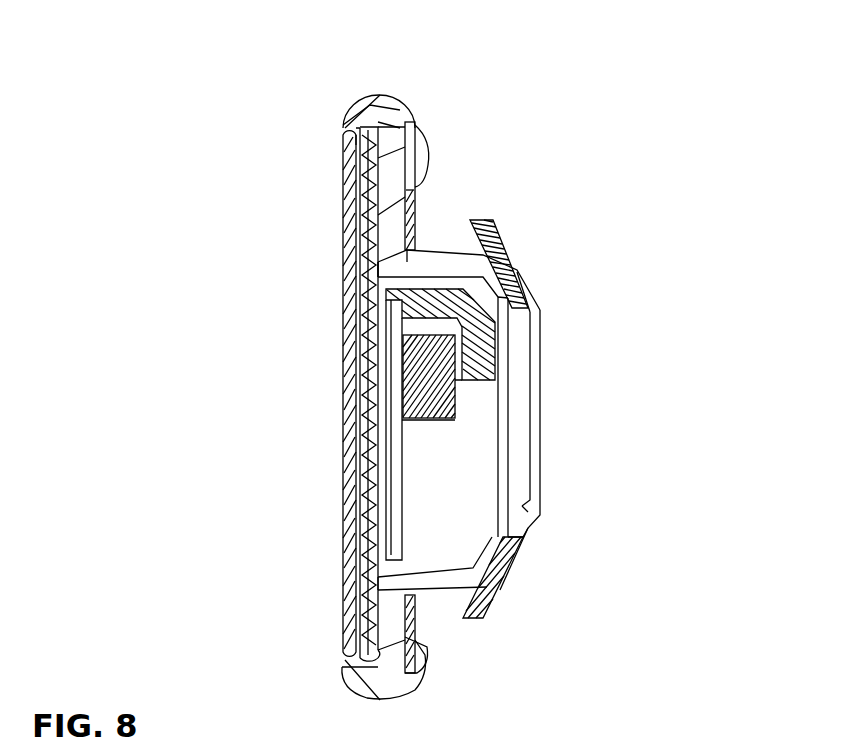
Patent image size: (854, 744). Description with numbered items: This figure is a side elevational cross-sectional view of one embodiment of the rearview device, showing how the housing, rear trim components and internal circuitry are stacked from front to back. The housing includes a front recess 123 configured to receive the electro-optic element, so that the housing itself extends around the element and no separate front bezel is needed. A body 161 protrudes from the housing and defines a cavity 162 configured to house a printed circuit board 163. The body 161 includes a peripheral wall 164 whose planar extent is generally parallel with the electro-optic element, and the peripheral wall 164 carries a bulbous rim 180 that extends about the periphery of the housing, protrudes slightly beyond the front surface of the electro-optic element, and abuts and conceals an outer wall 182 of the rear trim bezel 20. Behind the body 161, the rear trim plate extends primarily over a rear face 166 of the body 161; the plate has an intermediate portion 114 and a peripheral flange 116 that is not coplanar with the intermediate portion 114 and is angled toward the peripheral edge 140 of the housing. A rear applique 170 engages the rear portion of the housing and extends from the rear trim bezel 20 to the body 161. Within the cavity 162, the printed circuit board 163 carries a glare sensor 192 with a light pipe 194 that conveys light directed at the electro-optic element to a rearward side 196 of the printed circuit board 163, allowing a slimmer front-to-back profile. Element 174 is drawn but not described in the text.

The rear trim bezel 20 is at (428, 152).
The intermediate portion 114 is at (518, 517).
The peripheral flange 116 is at (503, 237).
The front recess 123 is at (368, 140).
The peripheral edge 140 is at (370, 95).
The body 161 is at (440, 240).
The cavity 162 is at (522, 480).
The printed circuit board 163 is at (397, 507).
The peripheral wall 164 is at (390, 228).
The rear face 166 is at (495, 453).
The rear applique 170 is at (413, 215).
The outer wall 174 is at (535, 345).
The bulbous rim 180 is at (340, 680).
The outer wall 182 is at (418, 125).
The glare sensor 192 is at (427, 373).
The light pipe 194 is at (397, 302).
The rearward side 196 is at (402, 407).